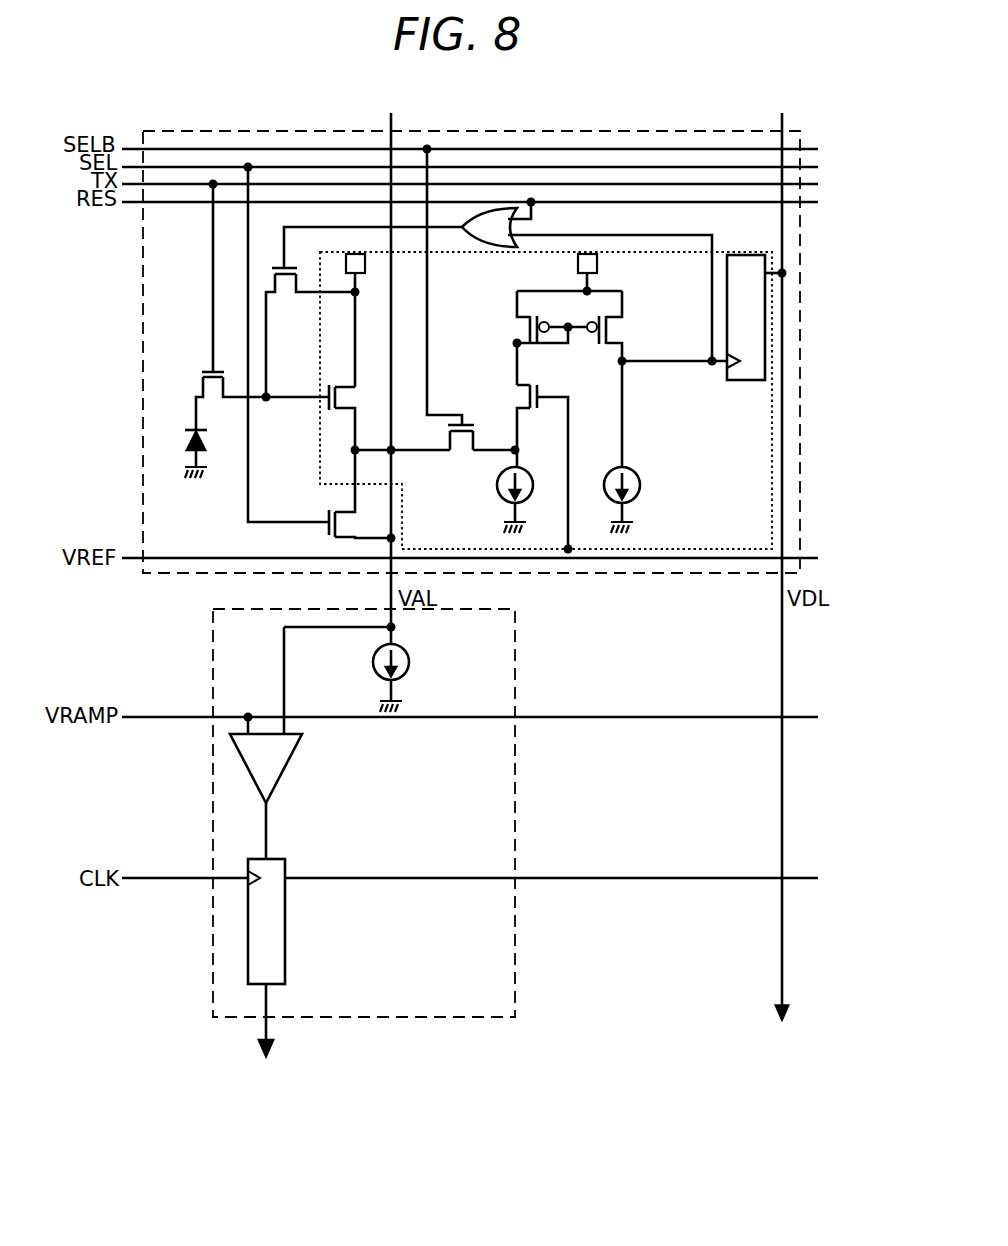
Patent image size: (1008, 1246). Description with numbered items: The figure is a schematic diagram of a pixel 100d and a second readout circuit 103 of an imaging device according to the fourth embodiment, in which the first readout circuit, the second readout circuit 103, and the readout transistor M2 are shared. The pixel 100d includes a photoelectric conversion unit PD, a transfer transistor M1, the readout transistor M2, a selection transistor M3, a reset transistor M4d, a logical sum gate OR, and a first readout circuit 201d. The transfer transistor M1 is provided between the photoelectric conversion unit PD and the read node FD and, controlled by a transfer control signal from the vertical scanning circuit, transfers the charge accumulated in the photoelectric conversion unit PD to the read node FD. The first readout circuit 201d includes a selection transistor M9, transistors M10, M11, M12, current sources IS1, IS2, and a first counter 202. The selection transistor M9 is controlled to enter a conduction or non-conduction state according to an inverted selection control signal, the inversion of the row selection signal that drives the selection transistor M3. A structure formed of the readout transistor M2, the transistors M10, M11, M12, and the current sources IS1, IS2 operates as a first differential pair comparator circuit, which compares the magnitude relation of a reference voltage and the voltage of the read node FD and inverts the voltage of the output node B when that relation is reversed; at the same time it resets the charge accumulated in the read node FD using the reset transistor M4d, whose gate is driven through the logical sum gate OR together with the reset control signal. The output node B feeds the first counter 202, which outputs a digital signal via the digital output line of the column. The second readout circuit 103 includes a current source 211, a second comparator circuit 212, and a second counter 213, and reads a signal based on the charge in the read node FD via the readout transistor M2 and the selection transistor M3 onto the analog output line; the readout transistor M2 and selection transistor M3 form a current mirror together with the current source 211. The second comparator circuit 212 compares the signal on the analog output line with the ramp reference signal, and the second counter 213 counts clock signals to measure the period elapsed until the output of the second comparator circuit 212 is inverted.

The pixel 100d is at (800, 371).
The first readout circuit 201d is at (772, 519).
The first counter 202 is at (746, 382).
The second readout circuit 103 is at (515, 993).
The current source 211 is at (410, 660).
The second comparator circuit 212 is at (290, 775).
The second counter 213 is at (286, 937).
The transfer transistor M1 is at (216, 400).
The readout transistor M2 is at (340, 397).
The selection transistor M3 is at (340, 522).
The reset transistor M4d is at (286, 296).
The selection transistor M9 is at (462, 455).
The transistor M10 is at (523, 397).
The transistor M11 is at (523, 325).
The transistor M12 is at (620, 325).
The photoelectric conversion unit PD is at (186, 434).
The read node FD is at (268, 402).
The logical sum gate OR is at (472, 248).
The output node B is at (614, 368).
The current source IS1 is at (535, 470).
The current source IS2 is at (642, 470).